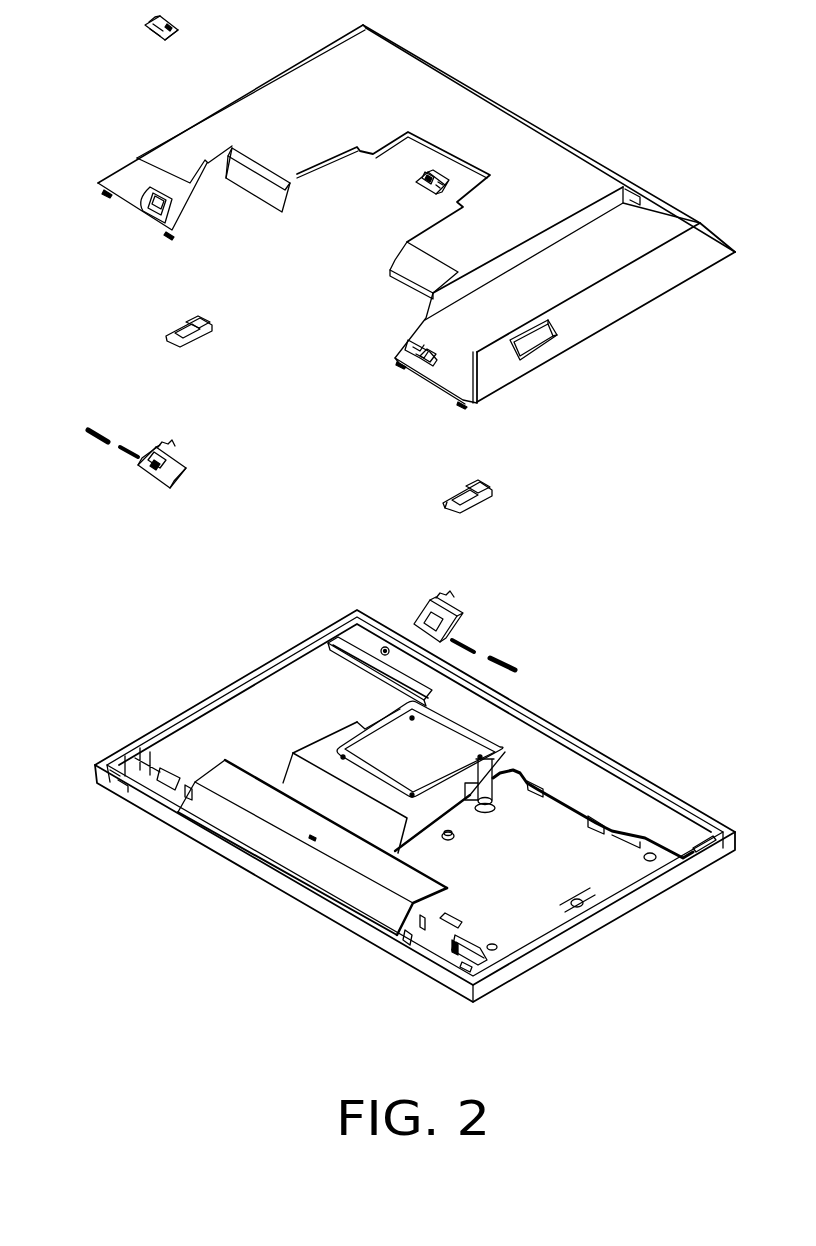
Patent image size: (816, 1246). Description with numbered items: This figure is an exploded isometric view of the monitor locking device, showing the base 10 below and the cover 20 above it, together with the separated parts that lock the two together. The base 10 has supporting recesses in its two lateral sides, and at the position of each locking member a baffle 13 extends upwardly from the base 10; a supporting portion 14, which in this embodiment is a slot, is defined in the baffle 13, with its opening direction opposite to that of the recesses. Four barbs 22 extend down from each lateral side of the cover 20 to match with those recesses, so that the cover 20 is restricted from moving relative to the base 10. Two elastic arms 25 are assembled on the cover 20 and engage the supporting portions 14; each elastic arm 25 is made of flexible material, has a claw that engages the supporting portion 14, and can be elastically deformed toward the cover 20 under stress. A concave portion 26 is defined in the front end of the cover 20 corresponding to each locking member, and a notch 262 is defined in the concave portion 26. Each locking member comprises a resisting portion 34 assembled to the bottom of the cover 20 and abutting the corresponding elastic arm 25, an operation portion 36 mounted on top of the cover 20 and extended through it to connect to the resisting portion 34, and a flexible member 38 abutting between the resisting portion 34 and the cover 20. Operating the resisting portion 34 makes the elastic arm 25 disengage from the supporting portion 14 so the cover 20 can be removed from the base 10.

The base 10 is at (553, 947).
The baffle 13 is at (475, 945).
The supporting portion 14 is at (447, 922).
The cover 20 is at (637, 287).
The barb 22 is at (510, 385).
The elastic arm 25 is at (457, 497).
The concave portion 26 is at (412, 345).
The notch 262 is at (415, 370).
The resisting portion 34 is at (153, 473).
The operation portion 36 is at (168, 32).
The flexible member 38 is at (95, 437).